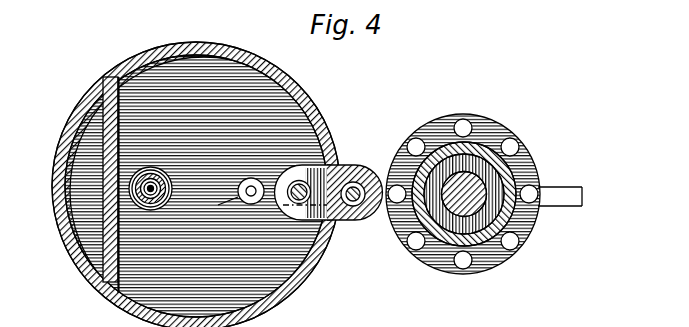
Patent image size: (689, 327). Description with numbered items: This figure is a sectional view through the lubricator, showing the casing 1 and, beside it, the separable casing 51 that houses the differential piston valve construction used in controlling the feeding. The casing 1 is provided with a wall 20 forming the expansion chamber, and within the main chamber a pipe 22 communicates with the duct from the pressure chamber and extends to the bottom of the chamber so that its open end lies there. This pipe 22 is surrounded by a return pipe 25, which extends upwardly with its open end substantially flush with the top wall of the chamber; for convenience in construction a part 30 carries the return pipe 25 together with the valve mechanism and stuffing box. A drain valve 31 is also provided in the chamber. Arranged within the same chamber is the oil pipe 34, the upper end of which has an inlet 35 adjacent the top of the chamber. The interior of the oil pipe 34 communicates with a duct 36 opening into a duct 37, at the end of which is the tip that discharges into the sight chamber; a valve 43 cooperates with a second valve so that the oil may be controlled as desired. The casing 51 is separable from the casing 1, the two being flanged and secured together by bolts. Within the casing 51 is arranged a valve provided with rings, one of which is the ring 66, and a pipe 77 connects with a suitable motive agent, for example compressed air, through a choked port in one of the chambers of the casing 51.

The casing 1 is at (53, 184).
The wall 20 is at (63, 224).
The pipe 22 is at (168, 178).
The return pipe 25 is at (150, 173).
The part 30 is at (148, 208).
The drain valve 31 is at (219, 209).
The oil pipe 34 is at (290, 200).
The inlet 35 is at (300, 181).
The duct 36 is at (296, 221).
The duct 37 is at (355, 207).
The valve 43 is at (359, 165).
The casing 51 is at (512, 176).
The ring 66 is at (488, 206).
The pipe 77 is at (581, 188).